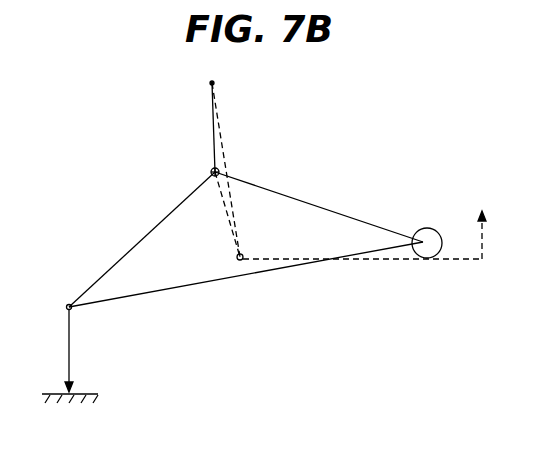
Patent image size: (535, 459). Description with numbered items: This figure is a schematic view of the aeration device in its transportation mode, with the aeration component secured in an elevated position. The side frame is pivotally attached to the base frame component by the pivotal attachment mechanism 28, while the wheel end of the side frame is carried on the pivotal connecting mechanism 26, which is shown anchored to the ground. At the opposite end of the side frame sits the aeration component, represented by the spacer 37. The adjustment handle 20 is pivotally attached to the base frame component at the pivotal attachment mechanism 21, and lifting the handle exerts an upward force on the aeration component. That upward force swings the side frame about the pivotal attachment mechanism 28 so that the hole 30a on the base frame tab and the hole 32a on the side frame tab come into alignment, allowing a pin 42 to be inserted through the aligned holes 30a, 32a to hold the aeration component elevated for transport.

The hole 30a is at (215, 84).
The hole 32a is at (240, 257).
The pin 42 is at (240, 257).
The pivotal attachment mechanism 28 is at (211, 170).
The pivotal attachment mechanism 21 is at (236, 258).
The spacer 37 is at (424, 228).
The adjustment handle 20 is at (472, 262).
The pivotal connecting mechanism 26 is at (66, 306).